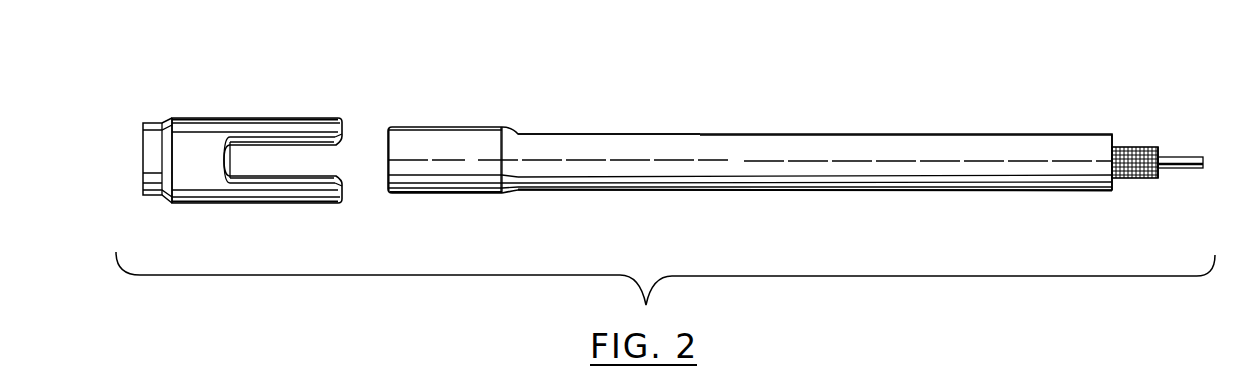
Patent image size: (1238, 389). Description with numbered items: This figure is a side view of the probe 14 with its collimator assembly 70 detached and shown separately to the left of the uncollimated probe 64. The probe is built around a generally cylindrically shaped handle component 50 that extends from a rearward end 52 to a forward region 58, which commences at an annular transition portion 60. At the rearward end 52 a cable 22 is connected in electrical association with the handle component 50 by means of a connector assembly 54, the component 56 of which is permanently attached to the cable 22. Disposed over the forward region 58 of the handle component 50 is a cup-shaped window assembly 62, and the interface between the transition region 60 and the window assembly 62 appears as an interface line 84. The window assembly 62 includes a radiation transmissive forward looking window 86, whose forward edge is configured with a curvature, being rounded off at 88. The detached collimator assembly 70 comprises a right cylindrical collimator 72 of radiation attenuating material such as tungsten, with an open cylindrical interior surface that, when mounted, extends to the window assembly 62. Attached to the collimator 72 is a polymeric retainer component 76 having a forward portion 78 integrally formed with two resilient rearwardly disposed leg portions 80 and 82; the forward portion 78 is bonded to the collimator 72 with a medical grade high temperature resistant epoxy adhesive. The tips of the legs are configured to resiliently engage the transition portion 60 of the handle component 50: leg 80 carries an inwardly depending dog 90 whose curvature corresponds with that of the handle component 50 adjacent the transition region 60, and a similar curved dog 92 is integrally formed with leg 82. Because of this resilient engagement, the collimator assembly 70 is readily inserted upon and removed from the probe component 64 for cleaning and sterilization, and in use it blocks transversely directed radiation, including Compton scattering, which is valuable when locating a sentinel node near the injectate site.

The probe 14 is at (843, 104).
The cable 22 is at (1177, 157).
The handle component 50 is at (822, 190).
The rearward end 52 is at (1112, 186).
The connector assembly 54 is at (1141, 124).
The connector component 56 is at (1148, 179).
The forward region 58 is at (481, 204).
The annular transition portion 60 is at (513, 133).
The window assembly 62 is at (467, 122).
The uncollimated probe 64 is at (961, 124).
The collimator assembly 70 is at (239, 104).
The collimator 72 is at (153, 198).
The retainer component 76 is at (216, 94).
The forward portion 78 is at (188, 112).
The resilient leg portion 80 is at (310, 118).
The resilient leg portion 82 is at (298, 207).
The interface line 84 is at (504, 128).
The forward looking window 86 is at (388, 160).
The rounded forward edge 88 is at (390, 194).
The dog 90 is at (345, 137).
The dog 92 is at (342, 182).